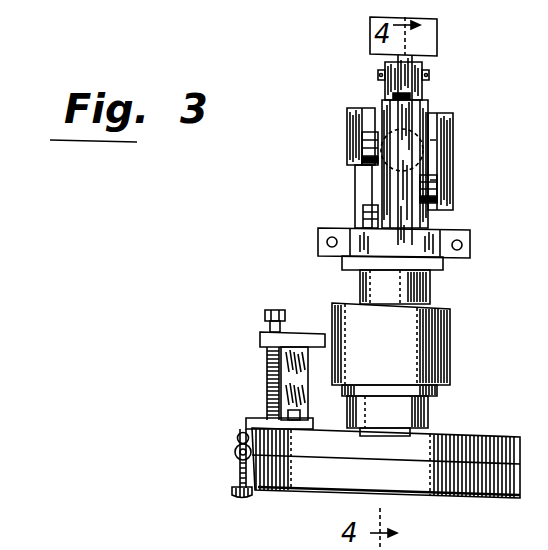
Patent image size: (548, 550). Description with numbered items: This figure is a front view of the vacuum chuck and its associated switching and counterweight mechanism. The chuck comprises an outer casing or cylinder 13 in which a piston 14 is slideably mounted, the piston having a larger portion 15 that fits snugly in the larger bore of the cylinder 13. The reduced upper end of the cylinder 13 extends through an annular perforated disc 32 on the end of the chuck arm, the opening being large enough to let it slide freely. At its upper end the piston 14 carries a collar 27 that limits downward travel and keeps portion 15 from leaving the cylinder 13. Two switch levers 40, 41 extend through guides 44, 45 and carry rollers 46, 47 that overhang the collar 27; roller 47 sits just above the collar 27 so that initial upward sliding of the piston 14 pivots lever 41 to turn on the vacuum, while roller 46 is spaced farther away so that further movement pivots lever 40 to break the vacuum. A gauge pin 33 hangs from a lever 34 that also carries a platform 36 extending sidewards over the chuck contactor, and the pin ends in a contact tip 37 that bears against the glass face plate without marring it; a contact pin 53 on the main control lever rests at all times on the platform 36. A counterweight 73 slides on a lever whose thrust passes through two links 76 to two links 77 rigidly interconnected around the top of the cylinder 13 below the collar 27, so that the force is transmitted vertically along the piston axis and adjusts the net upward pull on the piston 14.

The outer casing or cylinder 13 is at (452, 371).
The piston 14 is at (430, 410).
The piston portion 15 is at (440, 391).
The collar 27 is at (420, 226).
The annular perforated disc 32 is at (432, 268).
The gauge pin 33 is at (240, 469).
The lever 34 is at (246, 425).
The platform 36 is at (259, 418).
The contact tip 37 is at (252, 499).
The switch lever 40 is at (347, 148).
The switch lever 41 is at (447, 135).
The guide 44 is at (362, 186).
The guide 45 is at (433, 153).
The roller 46 is at (381, 115).
The roller 47 is at (430, 193).
The contact pin 53 is at (267, 366).
The counterweight 73 is at (437, 38).
The link 76 is at (413, 89).
The link 77 is at (385, 253).